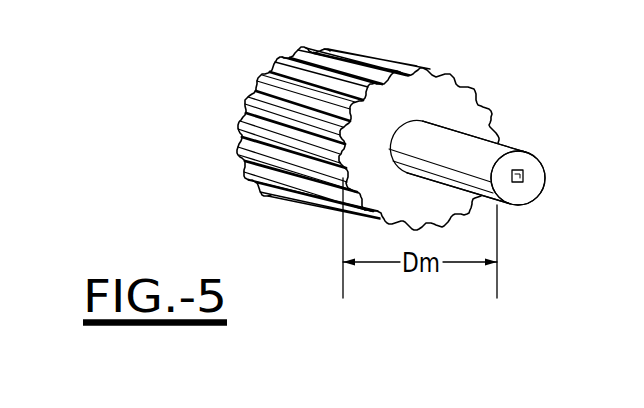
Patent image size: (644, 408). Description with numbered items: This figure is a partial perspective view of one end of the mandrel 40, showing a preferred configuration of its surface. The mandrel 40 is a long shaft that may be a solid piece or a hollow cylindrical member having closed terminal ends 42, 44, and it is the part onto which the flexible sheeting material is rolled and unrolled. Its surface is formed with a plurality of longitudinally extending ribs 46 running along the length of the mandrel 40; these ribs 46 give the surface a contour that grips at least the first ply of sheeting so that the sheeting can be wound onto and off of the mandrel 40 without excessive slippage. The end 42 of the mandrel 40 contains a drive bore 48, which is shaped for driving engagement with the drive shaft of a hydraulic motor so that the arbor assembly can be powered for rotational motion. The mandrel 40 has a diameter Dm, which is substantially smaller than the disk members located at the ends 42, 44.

The mandrel 40 is at (333, 124).
The longitudinally extending ribs 46 is at (435, 75).
The terminal end 42 is at (527, 153).
The terminal end 44 is at (476, 163).
The drive bore 48 is at (524, 177).